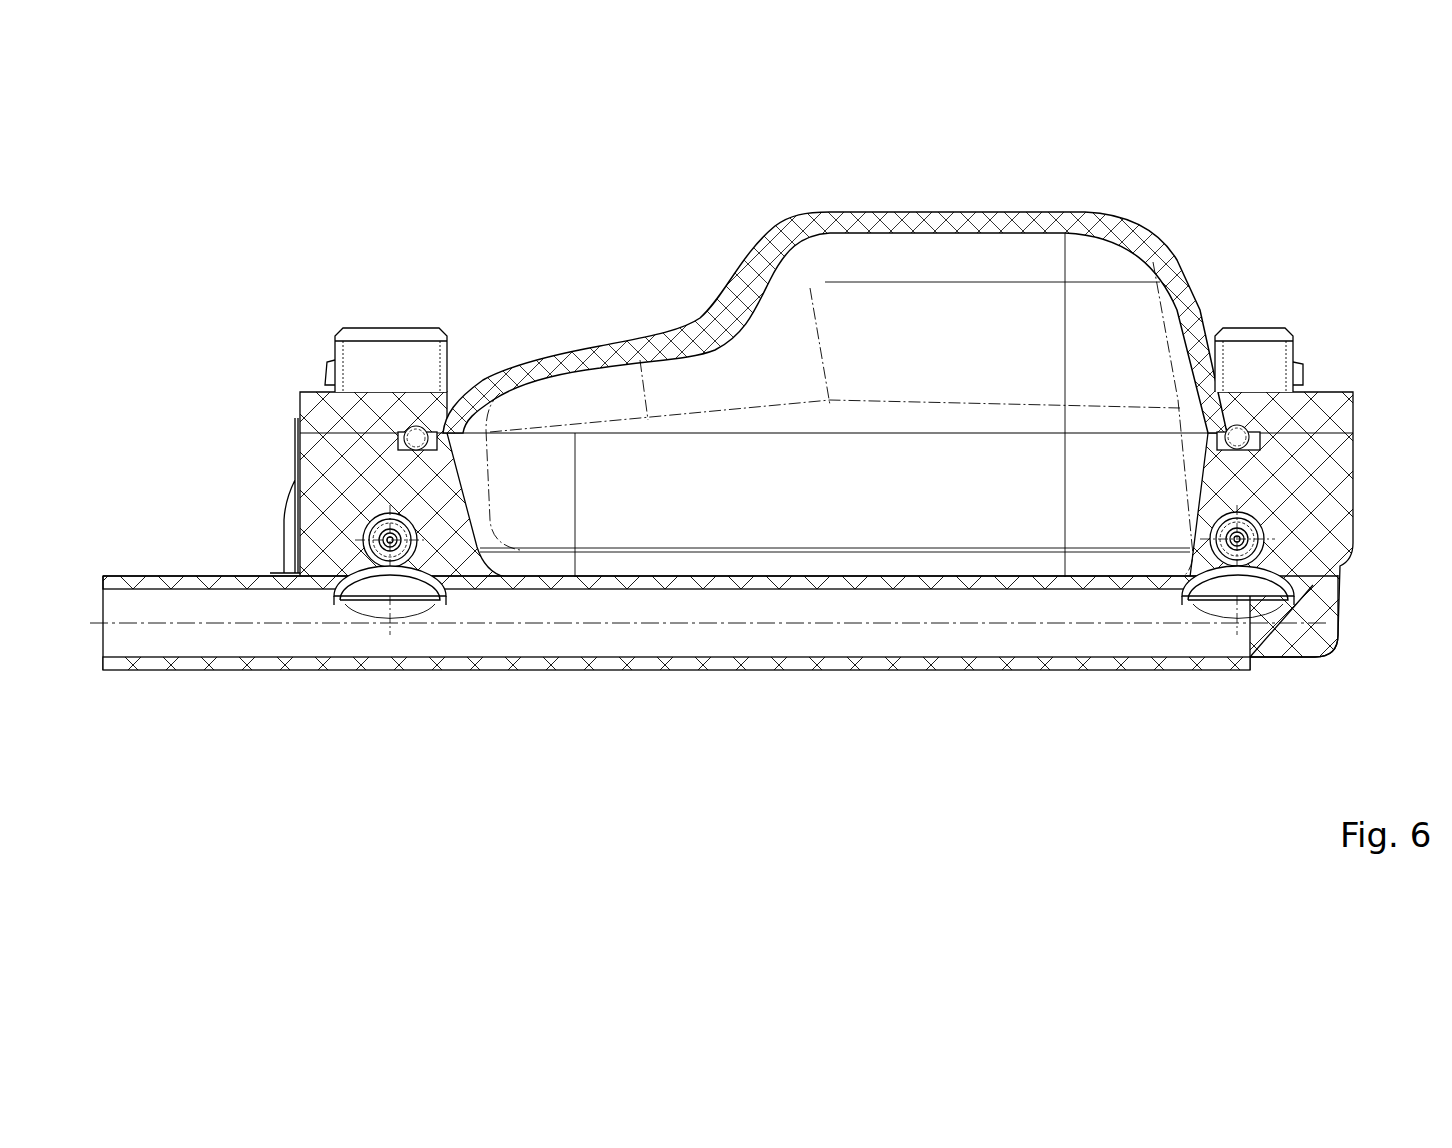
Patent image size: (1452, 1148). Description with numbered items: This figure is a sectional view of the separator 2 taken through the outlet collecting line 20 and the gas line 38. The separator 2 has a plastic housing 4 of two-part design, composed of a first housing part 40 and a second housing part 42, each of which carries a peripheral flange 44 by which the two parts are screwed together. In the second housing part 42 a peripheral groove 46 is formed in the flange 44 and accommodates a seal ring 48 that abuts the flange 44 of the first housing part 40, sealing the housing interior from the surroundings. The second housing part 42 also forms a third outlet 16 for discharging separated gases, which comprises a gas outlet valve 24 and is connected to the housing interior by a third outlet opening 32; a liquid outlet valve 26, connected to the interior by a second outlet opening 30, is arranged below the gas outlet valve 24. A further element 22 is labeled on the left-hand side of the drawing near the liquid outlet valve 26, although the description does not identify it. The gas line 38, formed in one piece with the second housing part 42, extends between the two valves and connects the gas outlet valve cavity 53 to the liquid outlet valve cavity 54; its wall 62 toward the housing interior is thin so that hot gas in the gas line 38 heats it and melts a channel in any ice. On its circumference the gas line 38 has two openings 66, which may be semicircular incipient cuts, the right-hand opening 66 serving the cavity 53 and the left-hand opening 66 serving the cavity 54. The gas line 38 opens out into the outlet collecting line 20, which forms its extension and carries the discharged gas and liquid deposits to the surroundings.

The separator 2 is at (718, 302).
The housing 4 is at (757, 236).
The third outlet 16 is at (1219, 562).
The outlet collecting line 20 is at (186, 665).
The screw 22 is at (403, 515).
The gas outlet valve 24 is at (1240, 328).
The liquid outlet valve 26 is at (390, 328).
The second outlet opening 30 is at (410, 532).
The third outlet opening 32 is at (1231, 565).
The gas line 38 is at (985, 653).
The first housing part 40 is at (1293, 352).
The second housing part 42 is at (1340, 575).
The peripheral flange 44 is at (1355, 410).
The peripheral groove 46 is at (1260, 450).
The seal ring 48 is at (1249, 437).
The gas outlet valve cavity 53 is at (1266, 612).
The liquid outlet valve cavity 54 is at (345, 612).
The wall of the gas line 62 is at (1040, 592).
The openings 66 is at (428, 608).